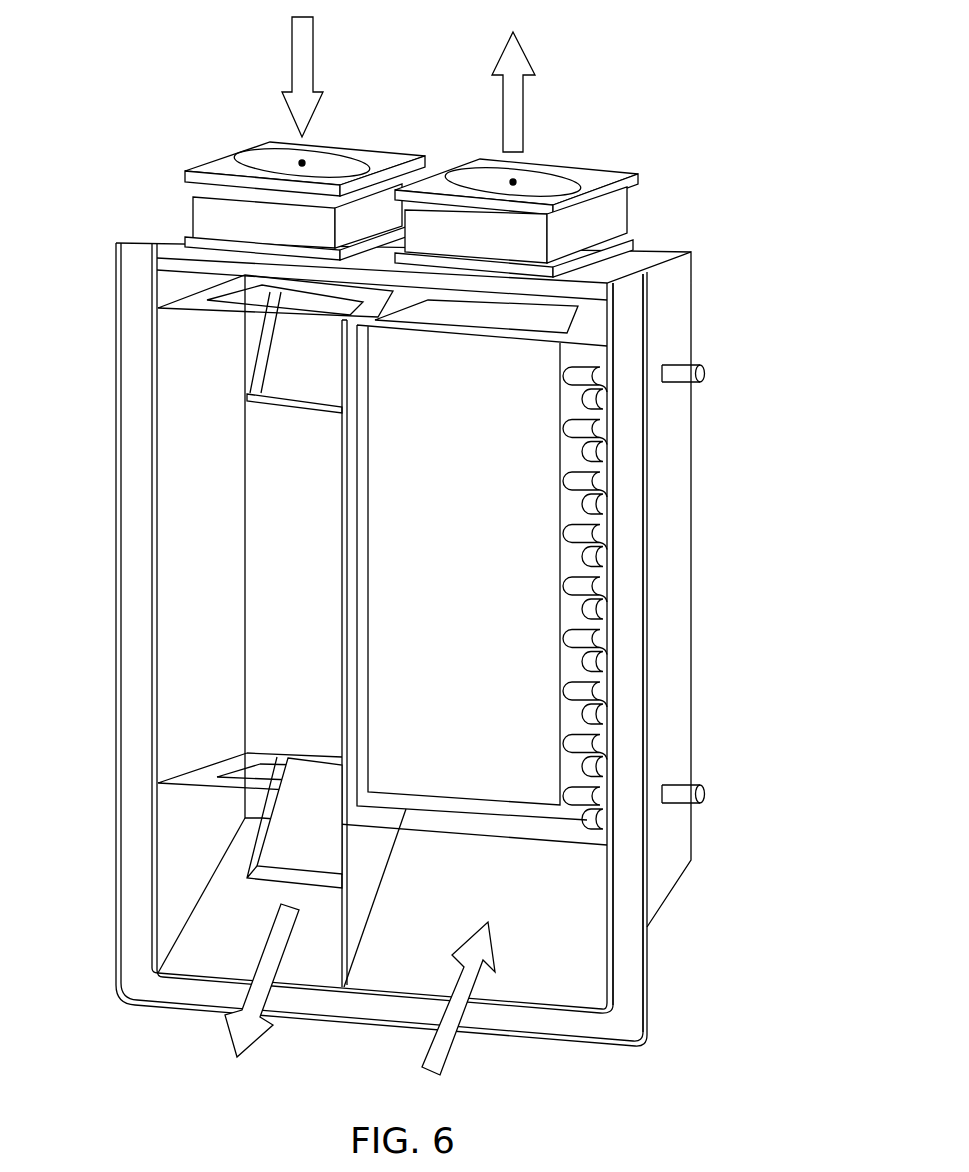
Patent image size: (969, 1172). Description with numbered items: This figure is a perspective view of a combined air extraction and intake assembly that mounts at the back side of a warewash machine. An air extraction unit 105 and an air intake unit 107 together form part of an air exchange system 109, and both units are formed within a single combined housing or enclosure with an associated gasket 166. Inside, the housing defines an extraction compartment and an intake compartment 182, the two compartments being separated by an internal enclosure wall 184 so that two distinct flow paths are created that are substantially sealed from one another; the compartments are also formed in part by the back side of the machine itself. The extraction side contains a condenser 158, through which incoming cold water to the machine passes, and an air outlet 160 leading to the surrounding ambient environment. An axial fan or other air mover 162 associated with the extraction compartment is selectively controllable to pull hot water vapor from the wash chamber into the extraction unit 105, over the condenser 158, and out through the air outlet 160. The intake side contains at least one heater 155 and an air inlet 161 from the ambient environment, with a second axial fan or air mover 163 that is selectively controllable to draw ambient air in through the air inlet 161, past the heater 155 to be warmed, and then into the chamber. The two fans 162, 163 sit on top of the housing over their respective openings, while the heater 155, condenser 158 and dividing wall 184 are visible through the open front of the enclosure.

The air exchange system 109 is at (492, 546).
The air intake unit 107 is at (347, 644).
The air outlet 160 is at (630, 239).
The air inlet 161 is at (192, 239).
The air mover 162 is at (577, 207).
The air mover 163 is at (257, 182).
The intake compartment 182 is at (245, 515).
The condenser 158 is at (383, 612).
The heater 155 is at (250, 760).
The internal enclosure wall 184 is at (363, 865).
The gasket 166 is at (668, 653).
The air extraction unit 105 is at (438, 706).